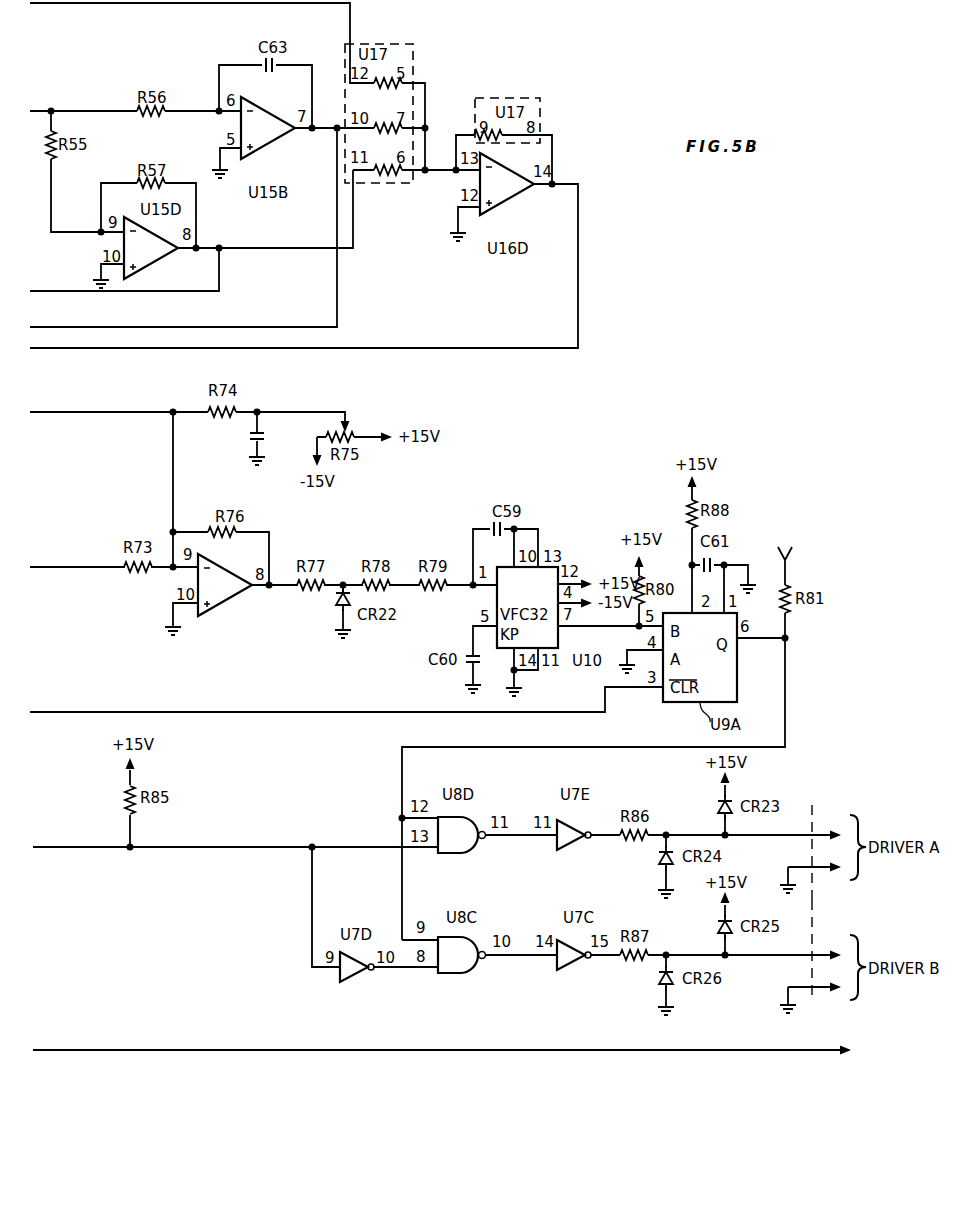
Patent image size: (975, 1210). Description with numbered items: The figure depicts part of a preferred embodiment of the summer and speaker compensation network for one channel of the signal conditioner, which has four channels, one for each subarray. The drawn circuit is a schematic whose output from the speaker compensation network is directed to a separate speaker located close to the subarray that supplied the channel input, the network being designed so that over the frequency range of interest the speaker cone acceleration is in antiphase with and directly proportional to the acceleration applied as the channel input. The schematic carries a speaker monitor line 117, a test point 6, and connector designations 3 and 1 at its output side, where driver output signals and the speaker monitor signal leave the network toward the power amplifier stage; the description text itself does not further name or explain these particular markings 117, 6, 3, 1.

The speaker monitor output line 117 is at (480, 1062).
The test point TP6 6 is at (781, 568).
The connector P3 (driver outputs) 3 is at (815, 830).
The connector P1 (speaker monitor) 1 is at (815, 970).